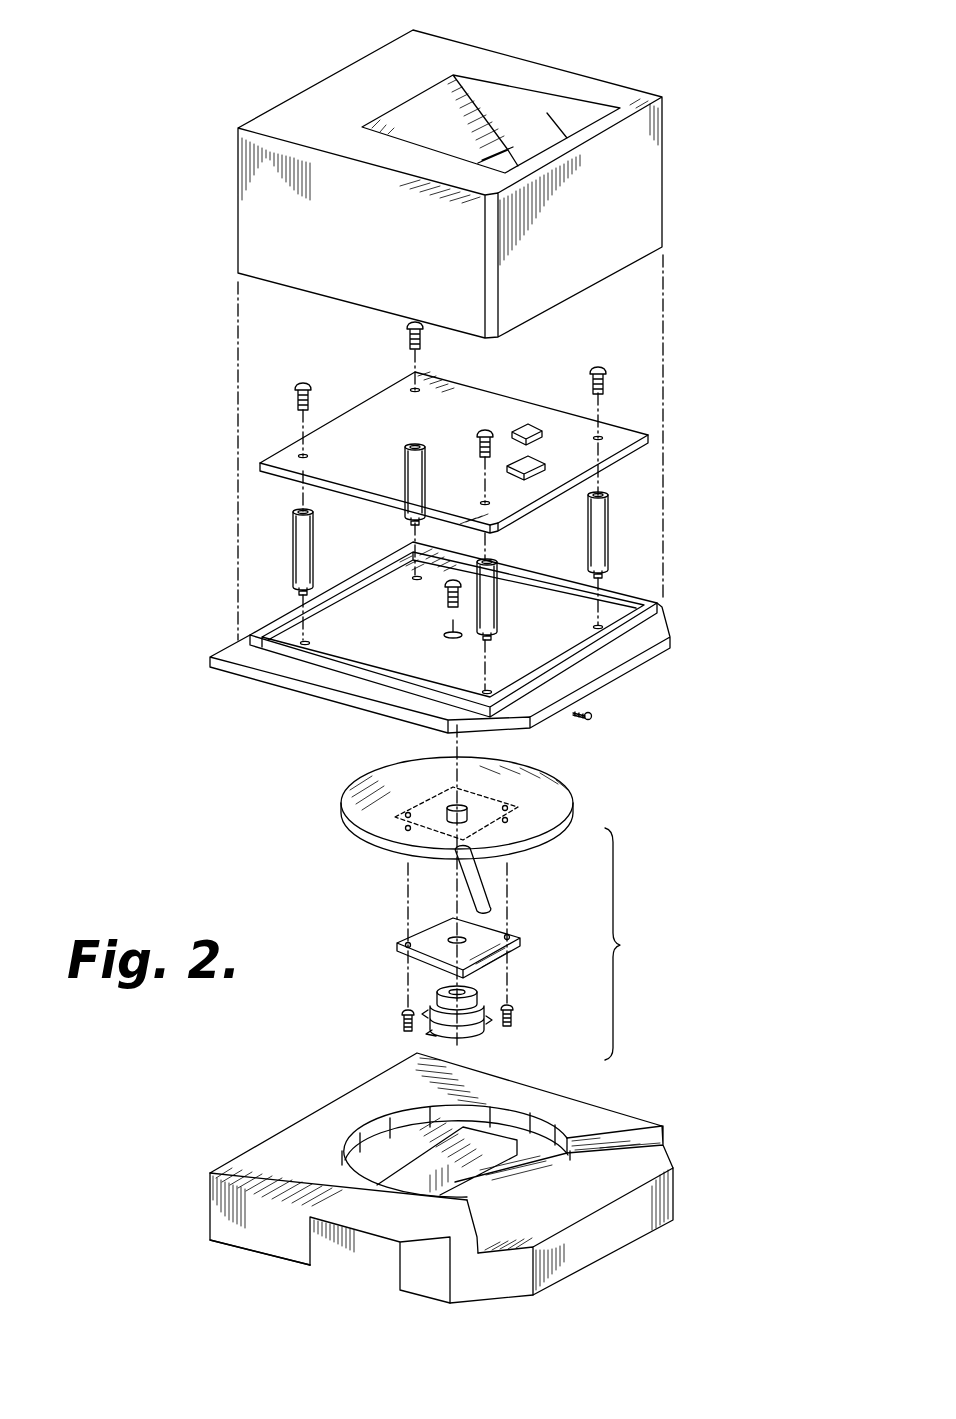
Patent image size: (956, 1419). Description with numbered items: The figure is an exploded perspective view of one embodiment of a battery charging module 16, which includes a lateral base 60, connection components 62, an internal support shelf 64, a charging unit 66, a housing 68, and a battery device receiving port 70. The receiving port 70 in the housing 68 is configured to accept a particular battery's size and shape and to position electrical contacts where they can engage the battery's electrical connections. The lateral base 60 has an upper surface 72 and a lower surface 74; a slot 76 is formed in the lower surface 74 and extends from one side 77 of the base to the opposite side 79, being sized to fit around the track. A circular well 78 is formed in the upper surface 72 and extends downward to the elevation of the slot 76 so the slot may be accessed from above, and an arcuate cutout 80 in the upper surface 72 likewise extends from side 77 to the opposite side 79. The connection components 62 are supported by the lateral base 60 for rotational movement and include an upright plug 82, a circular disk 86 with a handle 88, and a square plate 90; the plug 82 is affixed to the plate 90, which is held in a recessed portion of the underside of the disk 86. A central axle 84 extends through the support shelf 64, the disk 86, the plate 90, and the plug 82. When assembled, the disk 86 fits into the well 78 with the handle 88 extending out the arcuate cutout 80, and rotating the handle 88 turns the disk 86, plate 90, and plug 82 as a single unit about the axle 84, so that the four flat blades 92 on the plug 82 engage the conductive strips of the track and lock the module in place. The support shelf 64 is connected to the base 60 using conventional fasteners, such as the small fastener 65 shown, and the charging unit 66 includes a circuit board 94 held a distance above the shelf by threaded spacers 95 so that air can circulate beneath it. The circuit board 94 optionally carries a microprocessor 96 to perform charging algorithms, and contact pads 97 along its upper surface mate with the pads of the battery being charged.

The battery charging module 16 is at (127, 297).
The lateral base 60 is at (450, 1178).
The connection components 62 is at (496, 908).
The internal support shelf 64 is at (466, 626).
The screw 65 is at (592, 715).
The charging unit 66 is at (491, 435).
The housing 68 is at (480, 172).
The battery device receiving port 70 is at (515, 130).
The upper surface 72 is at (557, 1103).
The lower surface 74 is at (283, 1260).
The slot 76 is at (332, 1245).
The side 77 is at (233, 1237).
The circular well 78 is at (373, 1132).
The opposite side 79 is at (648, 1112).
The arcuate cutout 80 is at (643, 1168).
The upright plug 82 is at (490, 1003).
The central axle 84 is at (447, 603).
The circular disk 86 is at (535, 828).
The handle 88 is at (483, 890).
The square plate 90 is at (515, 948).
The flat blades 92 is at (510, 1035).
The circuit board 94 is at (377, 410).
The threaded spacers 95 is at (608, 532).
The microprocessor 96 is at (525, 425).
The contact pads 97 is at (533, 477).